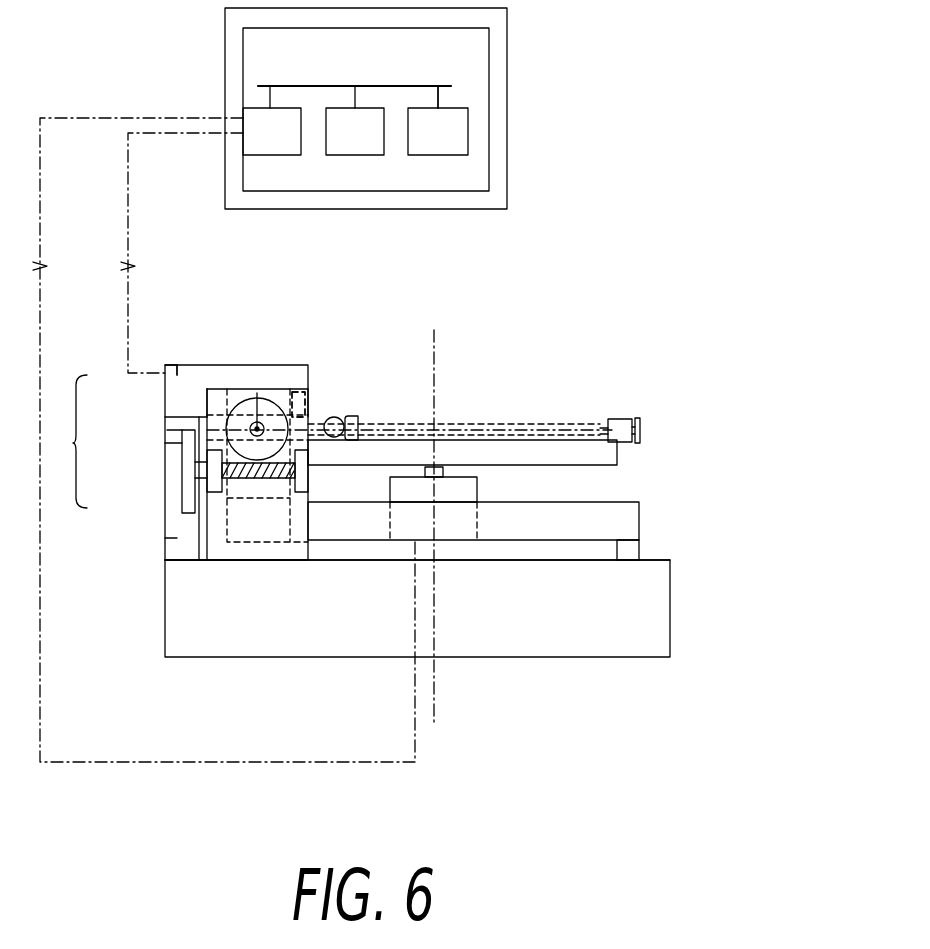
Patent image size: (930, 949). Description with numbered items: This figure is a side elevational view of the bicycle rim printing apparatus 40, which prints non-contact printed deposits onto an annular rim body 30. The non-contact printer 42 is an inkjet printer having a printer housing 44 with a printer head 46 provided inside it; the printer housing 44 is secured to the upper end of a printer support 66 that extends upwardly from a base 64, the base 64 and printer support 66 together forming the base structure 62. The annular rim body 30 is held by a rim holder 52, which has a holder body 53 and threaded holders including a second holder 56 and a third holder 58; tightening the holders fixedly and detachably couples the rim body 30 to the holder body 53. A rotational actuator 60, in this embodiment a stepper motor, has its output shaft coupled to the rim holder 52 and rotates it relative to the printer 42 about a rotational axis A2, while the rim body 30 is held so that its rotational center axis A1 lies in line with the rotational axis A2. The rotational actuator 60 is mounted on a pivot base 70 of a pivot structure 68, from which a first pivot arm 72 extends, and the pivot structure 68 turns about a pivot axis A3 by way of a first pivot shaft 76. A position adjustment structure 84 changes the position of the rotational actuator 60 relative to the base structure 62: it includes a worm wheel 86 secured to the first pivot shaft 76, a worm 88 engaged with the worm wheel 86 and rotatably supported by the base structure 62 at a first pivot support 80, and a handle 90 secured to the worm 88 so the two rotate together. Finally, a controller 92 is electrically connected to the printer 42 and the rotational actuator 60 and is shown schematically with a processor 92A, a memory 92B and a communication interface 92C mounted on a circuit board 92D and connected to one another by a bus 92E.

The controller 92 is at (507, 28).
The processor 92A is at (355, 131).
The memory 92B is at (438, 131).
The communication interface 92C is at (272, 131).
The circuit board 92D is at (300, 61).
The bus 92E is at (438, 86).
The bicycle rim printing apparatus 40 is at (619, 289).
The non-contact printer 42 is at (233, 363).
The printer housing 44 is at (176, 375).
The first pivot arm 72 is at (205, 388).
The printer head 46 is at (294, 392).
The first pivot support 80 is at (310, 400).
The first pivot shaft 76 is at (250, 392).
The pivot axis A3 is at (258, 393).
The position adjustment structure 84 is at (67, 441).
The worm wheel 86 is at (227, 410).
The handle 90 is at (167, 467).
The worm 88 is at (261, 482).
The printer support 66 is at (177, 538).
The third holder 58 is at (333, 416).
The rotational center axis A1 is at (437, 427).
The annular rim body 30 is at (576, 419).
The rim holder 52 is at (629, 407).
The second holder 56 is at (641, 427).
The holder body 53 is at (618, 458).
The rotational actuator 60 is at (481, 491).
The pivot structure 68 is at (646, 504).
The pivot base 70 is at (632, 532).
The base structure 62 is at (233, 664).
The base 64 is at (287, 648).
The rotational axis A2 is at (434, 697).